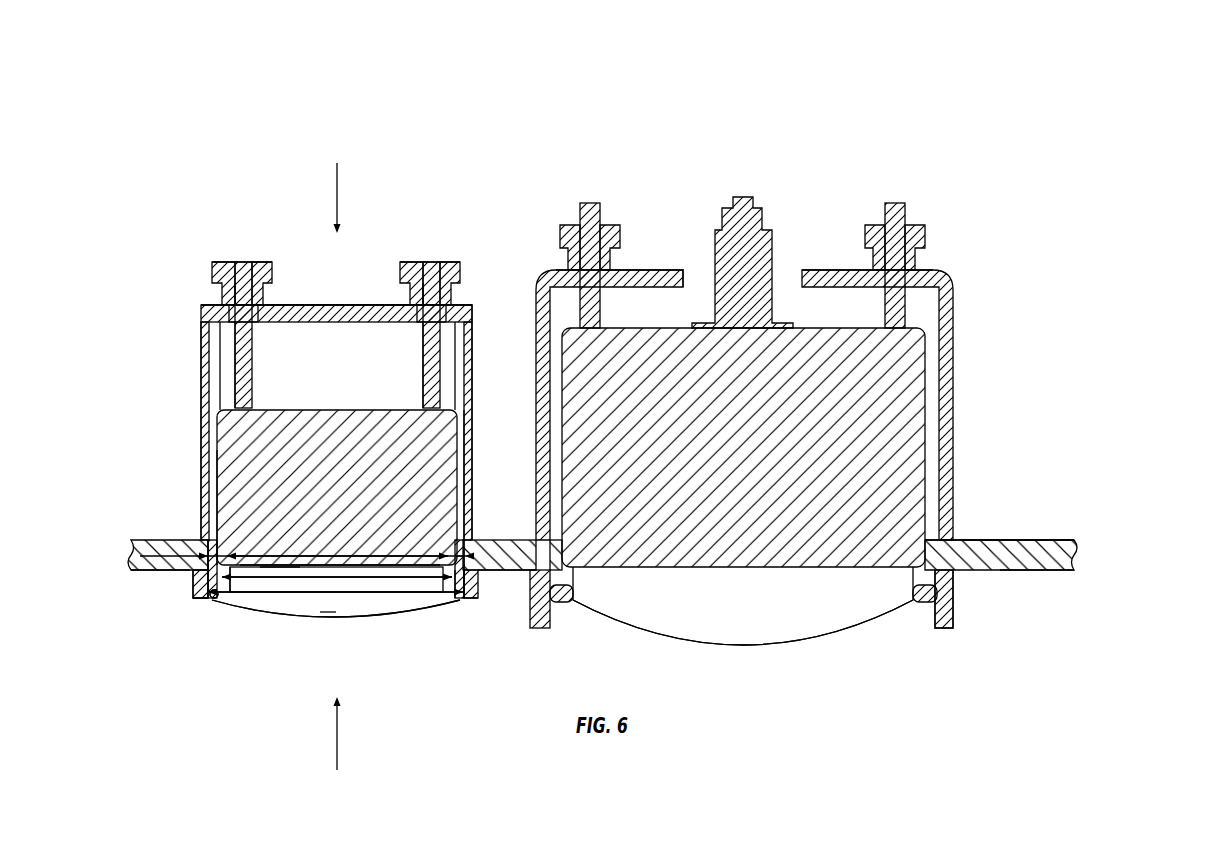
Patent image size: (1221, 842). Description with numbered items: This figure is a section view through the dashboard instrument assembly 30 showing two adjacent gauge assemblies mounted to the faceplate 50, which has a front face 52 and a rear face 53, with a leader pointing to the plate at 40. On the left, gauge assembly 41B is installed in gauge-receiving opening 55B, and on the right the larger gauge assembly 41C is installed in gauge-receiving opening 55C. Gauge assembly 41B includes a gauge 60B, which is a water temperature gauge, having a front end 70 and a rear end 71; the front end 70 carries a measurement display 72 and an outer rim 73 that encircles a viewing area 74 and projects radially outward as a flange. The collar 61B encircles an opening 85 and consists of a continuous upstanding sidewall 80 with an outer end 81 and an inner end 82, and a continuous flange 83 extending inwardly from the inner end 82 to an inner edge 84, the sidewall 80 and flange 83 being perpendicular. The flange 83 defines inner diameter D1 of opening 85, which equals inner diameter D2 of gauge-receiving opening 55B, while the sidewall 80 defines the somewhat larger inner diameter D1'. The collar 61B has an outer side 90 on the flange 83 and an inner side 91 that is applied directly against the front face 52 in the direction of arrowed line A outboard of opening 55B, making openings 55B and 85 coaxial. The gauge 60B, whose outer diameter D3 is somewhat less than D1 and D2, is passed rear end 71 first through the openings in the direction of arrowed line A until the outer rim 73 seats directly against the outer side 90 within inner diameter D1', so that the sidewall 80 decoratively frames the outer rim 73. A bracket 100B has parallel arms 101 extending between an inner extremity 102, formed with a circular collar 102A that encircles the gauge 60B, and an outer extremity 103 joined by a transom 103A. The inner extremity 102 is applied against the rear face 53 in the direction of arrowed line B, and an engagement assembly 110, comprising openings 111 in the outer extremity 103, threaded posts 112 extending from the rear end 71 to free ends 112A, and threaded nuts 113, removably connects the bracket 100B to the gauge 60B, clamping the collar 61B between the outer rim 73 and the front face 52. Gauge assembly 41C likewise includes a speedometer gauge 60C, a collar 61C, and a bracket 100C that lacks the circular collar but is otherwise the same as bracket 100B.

The dashboard instrument assembly 30 is at (622, 368).
The base plate 40 is at (643, 553).
The faceplate 50 is at (1015, 508).
The front face 52 is at (1050, 603).
The rear face 53 is at (1017, 505).
The gauge assembly 41B is at (321, 420).
The arms 101 is at (322, 431).
The inner extremity 102 is at (291, 553).
The circular collar 102A is at (494, 475).
The outer extremity 103 is at (313, 282).
The bridge or transom 103A is at (340, 277).
The front end 70 is at (185, 511).
The engagement assembly 110 is at (336, 296).
The threaded posts 112 is at (379, 350).
The free end 112A is at (347, 257).
The threaded nuts 113 is at (321, 228).
The openings 111 is at (297, 300).
The gauge 60B is at (371, 495).
The rear end 71 is at (279, 431).
The measurement display 72 is at (340, 606).
The outer rim 73 is at (472, 627).
The viewing area 74 is at (311, 583).
The sidewall 80 is at (167, 615).
The outer end 81 is at (187, 631).
The inner end 82 is at (167, 586).
The collar 61B is at (491, 610).
The gauge-receiving opening 55B is at (336, 639).
The outer side 90 is at (233, 619).
The inner edge 84 is at (256, 617).
The opening 85 is at (284, 629).
The inner diameter D1' is at (335, 625).
The inner diameter D1 is at (337, 598).
The inner diameter D2 is at (341, 619).
The outer diameter D3 is at (138, 594).
The inner side 91 is at (484, 516).
The flange 83 is at (507, 537).
The gauge assembly 41C is at (786, 438).
The bracket 100C is at (784, 242).
The collar 61C is at (988, 606).
The gauge-receiving opening 55C is at (743, 621).
The gauge 60C is at (781, 382).
The bracket 100B is at (360, 267).
The arrowed line A is at (367, 744).
The arrowed line B is at (367, 186).